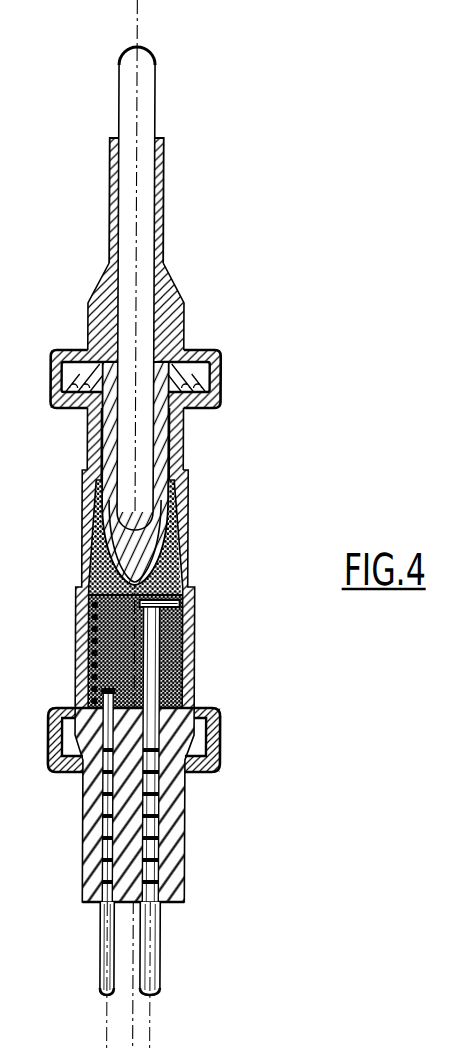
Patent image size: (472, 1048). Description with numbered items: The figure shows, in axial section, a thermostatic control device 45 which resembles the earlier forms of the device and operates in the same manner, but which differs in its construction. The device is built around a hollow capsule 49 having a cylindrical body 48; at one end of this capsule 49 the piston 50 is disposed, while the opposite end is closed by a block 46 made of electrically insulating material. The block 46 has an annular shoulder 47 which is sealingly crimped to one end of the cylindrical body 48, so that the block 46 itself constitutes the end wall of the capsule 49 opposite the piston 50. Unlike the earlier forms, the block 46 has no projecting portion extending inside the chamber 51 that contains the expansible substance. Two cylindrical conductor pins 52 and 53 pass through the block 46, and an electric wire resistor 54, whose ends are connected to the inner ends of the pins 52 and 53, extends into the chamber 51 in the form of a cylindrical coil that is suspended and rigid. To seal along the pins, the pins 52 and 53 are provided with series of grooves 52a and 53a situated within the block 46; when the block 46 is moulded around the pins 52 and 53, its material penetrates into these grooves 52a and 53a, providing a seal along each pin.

The thermostatic control device 45 is at (224, 454).
The block 46 is at (170, 808).
The annular shoulder 47 is at (198, 740).
The cylindrical body 48 is at (184, 659).
The hollow capsule 49 is at (194, 555).
The piston 50 is at (139, 108).
The chamber 51 is at (112, 575).
The conductor pin 52 is at (108, 945).
The conductor pin 53 is at (152, 946).
The grooves 52a is at (102, 842).
The grooves 53a is at (158, 838).
The electric wire resistor 54 is at (93, 658).